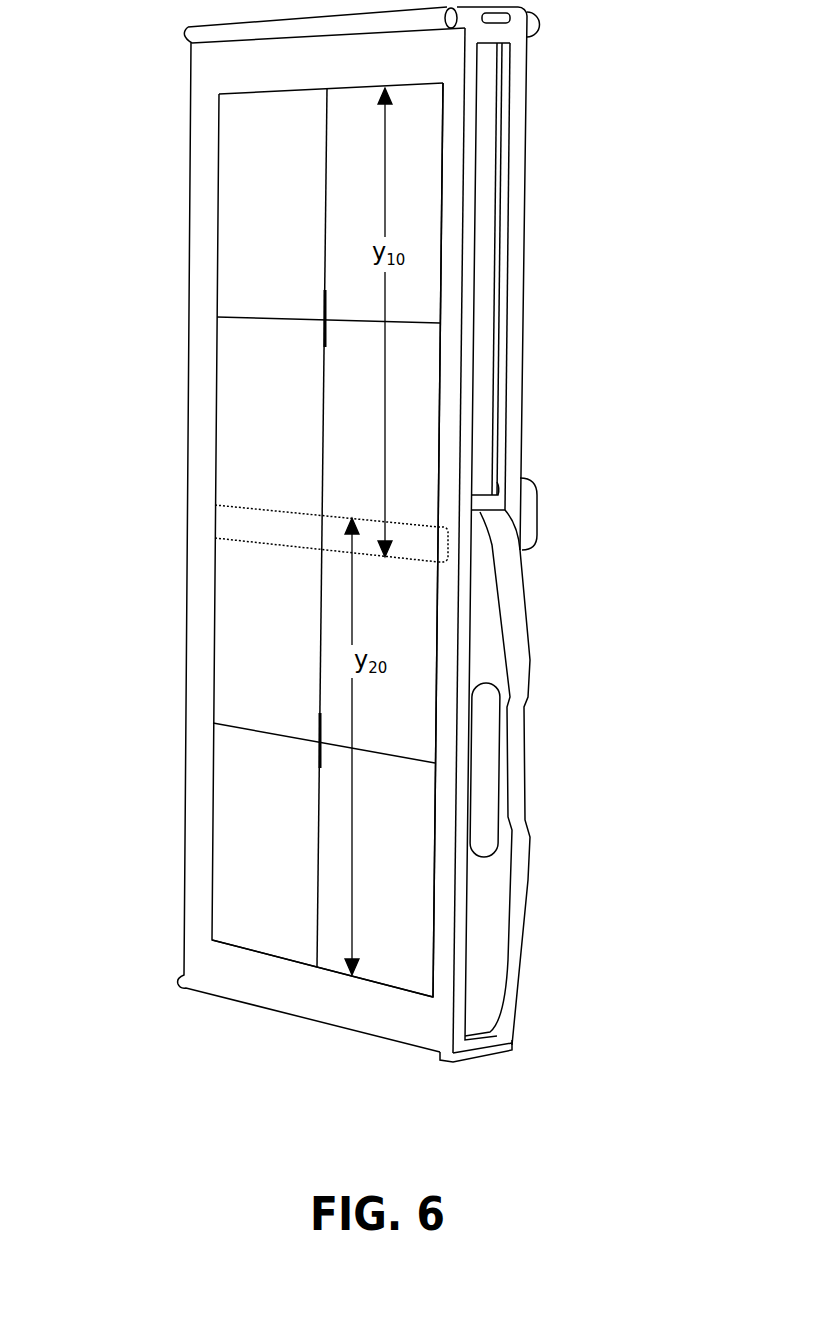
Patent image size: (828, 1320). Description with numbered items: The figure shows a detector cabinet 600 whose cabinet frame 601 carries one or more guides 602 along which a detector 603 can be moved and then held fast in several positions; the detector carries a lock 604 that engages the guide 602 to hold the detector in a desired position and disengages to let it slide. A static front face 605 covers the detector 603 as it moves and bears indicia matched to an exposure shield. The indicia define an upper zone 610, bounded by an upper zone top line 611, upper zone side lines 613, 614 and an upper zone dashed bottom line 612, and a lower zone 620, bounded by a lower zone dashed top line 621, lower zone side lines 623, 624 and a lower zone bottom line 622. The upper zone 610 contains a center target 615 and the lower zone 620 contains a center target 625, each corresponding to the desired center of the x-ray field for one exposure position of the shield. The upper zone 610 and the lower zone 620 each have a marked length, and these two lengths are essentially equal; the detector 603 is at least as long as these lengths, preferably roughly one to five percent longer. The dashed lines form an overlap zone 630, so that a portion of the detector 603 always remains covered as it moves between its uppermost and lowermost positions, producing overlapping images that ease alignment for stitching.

The detector cabinet 600 is at (543, 216).
The cabinet frame 601 is at (545, 65).
The guide 602 is at (497, 133).
The detector 603 is at (528, 665).
The lock 604 is at (537, 500).
The front face 605 is at (245, 197).
The upper zone 610 is at (260, 152).
The upper zone top line 611 is at (253, 92).
The upper zone dashed bottom line 612 is at (245, 540).
The upper zone side line 613 is at (217, 377).
The upper zone side line 614 is at (440, 362).
The center target 615 is at (305, 307).
The lower zone 620 is at (246, 631).
The lower zone dashed top line 621 is at (250, 510).
The lower zone bottom line 622 is at (248, 950).
The lower zone side line 623 is at (215, 675).
The lower zone side line 624 is at (435, 815).
The center target 625 is at (303, 757).
The overlap zone 630 is at (447, 545).